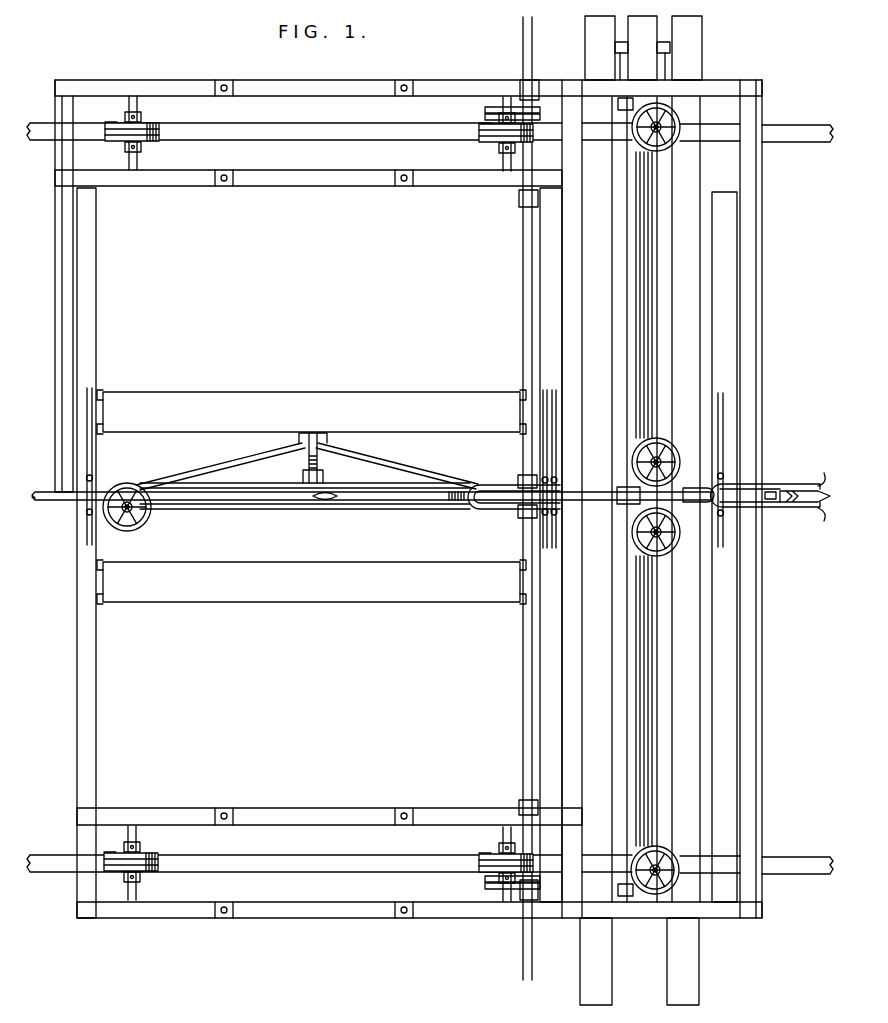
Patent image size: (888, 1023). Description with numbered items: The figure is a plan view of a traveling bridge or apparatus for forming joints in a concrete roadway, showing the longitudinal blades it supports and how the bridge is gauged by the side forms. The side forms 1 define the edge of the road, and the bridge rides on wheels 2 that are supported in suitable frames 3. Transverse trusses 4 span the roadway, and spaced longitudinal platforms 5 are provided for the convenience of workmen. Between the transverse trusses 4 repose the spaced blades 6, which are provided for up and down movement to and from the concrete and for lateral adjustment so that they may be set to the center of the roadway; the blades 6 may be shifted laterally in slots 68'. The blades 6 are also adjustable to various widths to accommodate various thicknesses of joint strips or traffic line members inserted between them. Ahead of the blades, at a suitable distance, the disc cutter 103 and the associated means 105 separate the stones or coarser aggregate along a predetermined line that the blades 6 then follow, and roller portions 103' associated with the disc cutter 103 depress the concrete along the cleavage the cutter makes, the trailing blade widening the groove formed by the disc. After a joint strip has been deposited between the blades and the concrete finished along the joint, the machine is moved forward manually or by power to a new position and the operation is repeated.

The side forms 1 is at (307, 133).
The wheels 2 is at (115, 123).
The frames 3 is at (332, 82).
The transverse trusses 4 is at (97, 666).
The longitudinal platform 5 is at (250, 392).
The spaced blades 6 is at (275, 484).
The slots 68' is at (405, 468).
The disc cutter 103 is at (751, 511).
The roller portions 103' is at (807, 501).
The separating means 105 is at (772, 491).